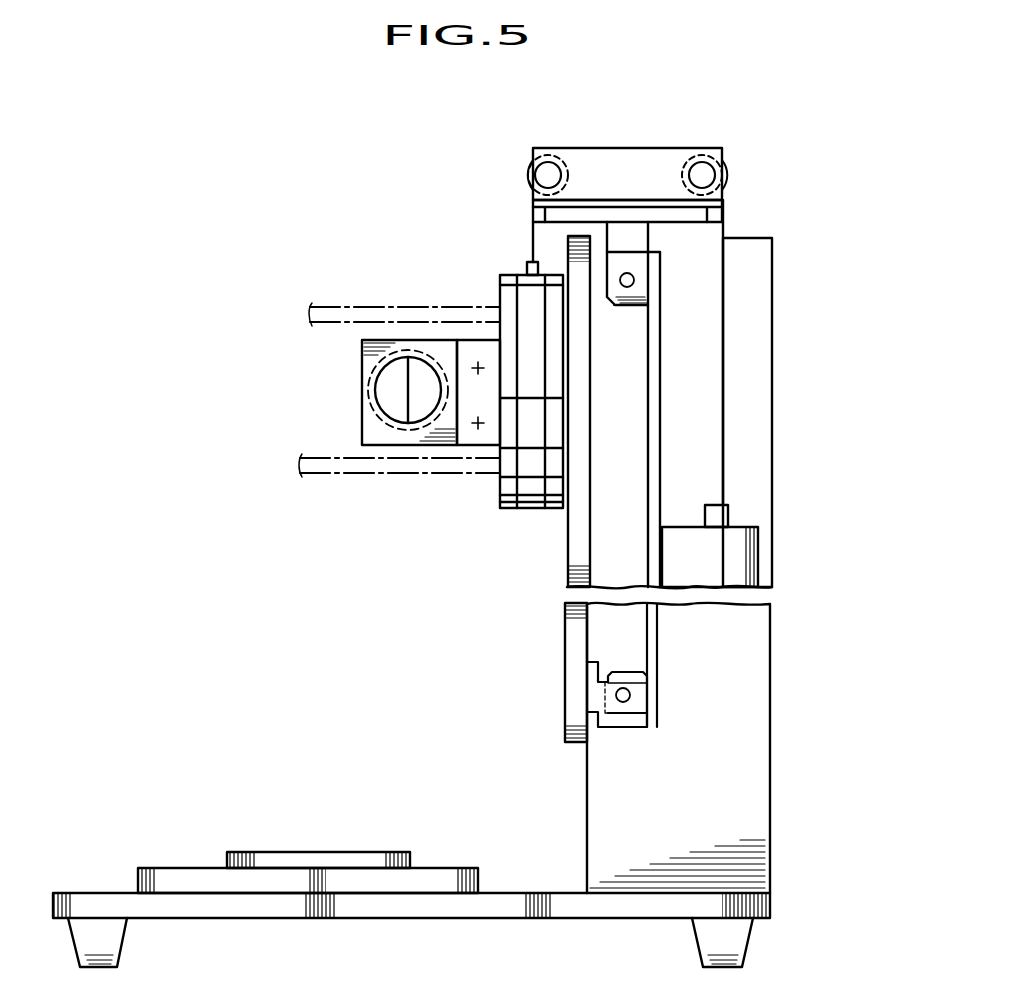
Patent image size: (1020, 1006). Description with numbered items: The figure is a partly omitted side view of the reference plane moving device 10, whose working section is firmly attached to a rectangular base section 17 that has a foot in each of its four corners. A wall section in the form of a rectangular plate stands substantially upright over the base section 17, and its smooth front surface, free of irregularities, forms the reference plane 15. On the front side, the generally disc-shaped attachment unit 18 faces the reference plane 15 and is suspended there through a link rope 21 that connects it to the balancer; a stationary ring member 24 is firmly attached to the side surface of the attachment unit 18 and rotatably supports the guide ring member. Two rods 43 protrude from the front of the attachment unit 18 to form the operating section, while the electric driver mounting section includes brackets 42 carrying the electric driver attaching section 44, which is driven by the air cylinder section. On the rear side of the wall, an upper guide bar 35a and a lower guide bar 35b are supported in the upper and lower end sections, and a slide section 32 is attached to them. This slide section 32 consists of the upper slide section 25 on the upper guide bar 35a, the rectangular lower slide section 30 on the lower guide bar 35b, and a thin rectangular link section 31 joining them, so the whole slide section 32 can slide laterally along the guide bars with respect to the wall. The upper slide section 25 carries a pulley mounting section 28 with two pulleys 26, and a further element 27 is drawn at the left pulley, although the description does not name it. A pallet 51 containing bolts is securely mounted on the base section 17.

The reference plane moving device 10 is at (316, 248).
The reference plane 15 is at (565, 632).
The base section 17 is at (100, 905).
The attachment unit 18 is at (502, 525).
The link rope 21 is at (533, 235).
The stationary ring member 24 is at (505, 495).
The upper slide section 25 is at (680, 148).
The pulleys 26 is at (530, 165).
The roller shaft 27 is at (552, 170).
The pulley mounting section 28 is at (633, 168).
The lower slide section 30 is at (620, 722).
The link section 31 is at (660, 420).
The slide section 32 is at (745, 220).
The upper guide bar 35a is at (634, 280).
The lower guide bar 35b is at (631, 695).
The brackets 42 is at (465, 342).
The rods 43 is at (355, 307).
The electric driver attaching section 44 is at (360, 372).
The pallet 51 is at (330, 858).